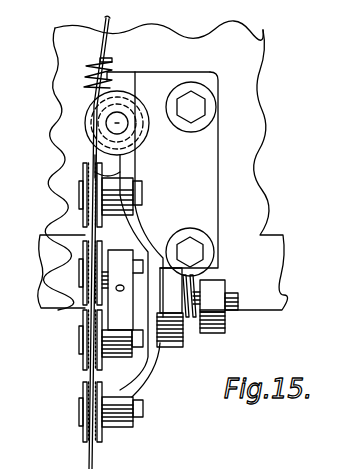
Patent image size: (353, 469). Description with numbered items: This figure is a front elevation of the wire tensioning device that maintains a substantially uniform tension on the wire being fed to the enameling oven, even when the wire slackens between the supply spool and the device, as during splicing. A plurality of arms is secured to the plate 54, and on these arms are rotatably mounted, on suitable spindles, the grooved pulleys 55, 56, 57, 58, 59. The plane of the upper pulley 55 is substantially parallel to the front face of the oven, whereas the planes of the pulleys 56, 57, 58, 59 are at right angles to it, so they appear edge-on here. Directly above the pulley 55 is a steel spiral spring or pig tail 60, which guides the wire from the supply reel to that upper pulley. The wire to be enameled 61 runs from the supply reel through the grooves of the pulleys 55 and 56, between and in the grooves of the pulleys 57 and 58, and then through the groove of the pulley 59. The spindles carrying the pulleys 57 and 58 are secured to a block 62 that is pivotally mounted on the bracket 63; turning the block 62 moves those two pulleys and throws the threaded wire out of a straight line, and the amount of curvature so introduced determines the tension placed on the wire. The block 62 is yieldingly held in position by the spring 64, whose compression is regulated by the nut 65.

The plate 54 is at (207, 160).
The grooved pulley 55 is at (88, 116).
The grooved pulley 56 is at (84, 176).
The grooved pulley 57 is at (83, 251).
The grooved pulley 58 is at (83, 322).
The grooved pulley 59 is at (83, 385).
The spiral spring 60 is at (93, 95).
The wire 61 is at (104, 22).
The block 62 is at (118, 333).
The bracket 63 is at (153, 264).
The spring 64 is at (200, 283).
The nut 65 is at (217, 287).